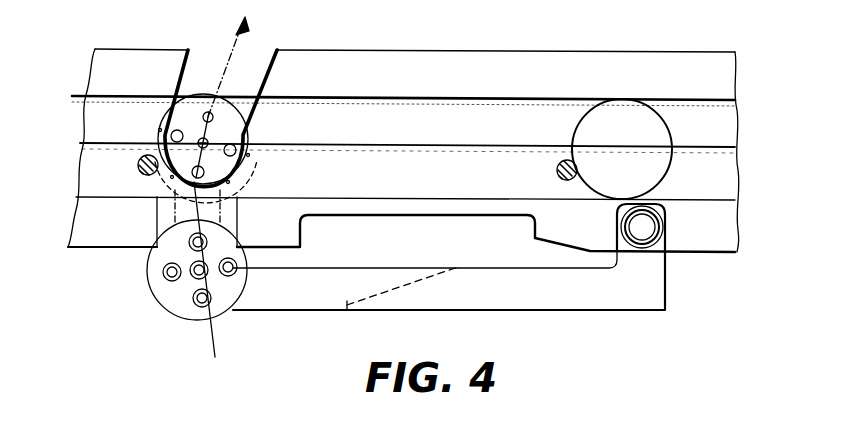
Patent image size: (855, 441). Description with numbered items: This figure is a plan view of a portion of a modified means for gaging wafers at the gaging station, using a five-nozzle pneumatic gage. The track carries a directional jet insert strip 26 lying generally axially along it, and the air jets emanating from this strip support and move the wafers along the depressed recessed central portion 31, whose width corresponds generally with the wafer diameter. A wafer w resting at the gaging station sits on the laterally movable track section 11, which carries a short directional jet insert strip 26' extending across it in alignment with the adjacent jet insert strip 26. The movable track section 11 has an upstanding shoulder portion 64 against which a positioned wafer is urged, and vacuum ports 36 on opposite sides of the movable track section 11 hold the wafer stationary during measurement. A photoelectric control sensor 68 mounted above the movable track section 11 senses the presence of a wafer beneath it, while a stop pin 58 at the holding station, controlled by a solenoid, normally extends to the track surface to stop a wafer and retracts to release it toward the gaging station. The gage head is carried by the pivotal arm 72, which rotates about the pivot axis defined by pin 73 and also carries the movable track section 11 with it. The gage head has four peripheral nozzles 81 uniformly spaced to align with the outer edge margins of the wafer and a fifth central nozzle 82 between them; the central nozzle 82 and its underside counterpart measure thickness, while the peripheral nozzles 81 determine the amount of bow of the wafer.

The jet insert strip 26 is at (388, 150).
The directional jet insert strip 26' is at (234, 136).
The depressed recessed central portion 31 is at (387, 106).
The upstanding shoulder portion 64 is at (198, 91).
The movable track section 11 is at (222, 140).
The vacuum ports 36 is at (161, 131).
The photoelectric control sensor 68 is at (140, 171).
The wheel / workpiece w is at (249, 165).
The stop pin 58 is at (557, 174).
The pivotal arm 72 is at (568, 303).
The pin 73 is at (649, 233).
The peripheral nozzles 81 is at (188, 242).
The central nozzle 82 is at (208, 276).